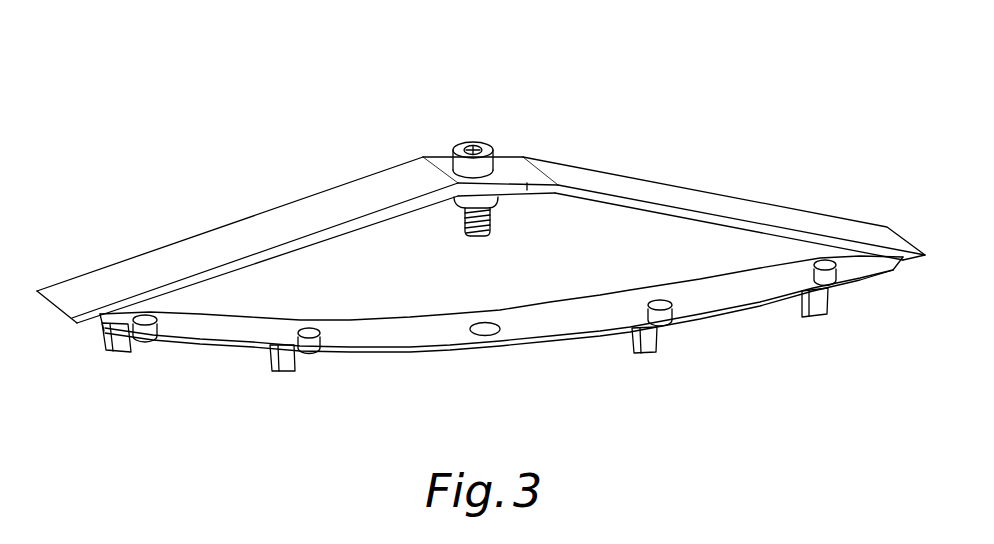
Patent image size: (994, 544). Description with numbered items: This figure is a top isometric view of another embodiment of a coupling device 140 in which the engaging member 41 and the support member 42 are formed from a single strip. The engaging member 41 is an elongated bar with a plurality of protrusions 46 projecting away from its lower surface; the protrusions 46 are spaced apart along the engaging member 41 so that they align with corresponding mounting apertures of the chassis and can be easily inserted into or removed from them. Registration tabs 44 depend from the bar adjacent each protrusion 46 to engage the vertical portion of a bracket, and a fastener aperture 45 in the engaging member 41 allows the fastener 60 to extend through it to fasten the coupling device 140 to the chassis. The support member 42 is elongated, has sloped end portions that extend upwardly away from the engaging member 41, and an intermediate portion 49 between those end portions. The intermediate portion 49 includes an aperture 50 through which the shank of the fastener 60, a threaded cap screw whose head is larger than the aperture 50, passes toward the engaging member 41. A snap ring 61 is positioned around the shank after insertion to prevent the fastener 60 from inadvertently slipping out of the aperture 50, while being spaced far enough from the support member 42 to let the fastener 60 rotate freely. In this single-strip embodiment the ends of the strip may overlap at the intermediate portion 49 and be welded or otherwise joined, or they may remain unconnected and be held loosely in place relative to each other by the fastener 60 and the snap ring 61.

The coupling device 140 is at (481, 177).
The engaging member 41 is at (867, 277).
The support member 42 is at (790, 222).
The registration tabs 44 is at (284, 368).
The fastener aperture 45 is at (487, 321).
The protrusions 46 is at (140, 345).
The intermediate portion 49 is at (468, 117).
The aperture 50 is at (430, 163).
The fastener 60 is at (455, 160).
The snap ring 61 is at (500, 202).